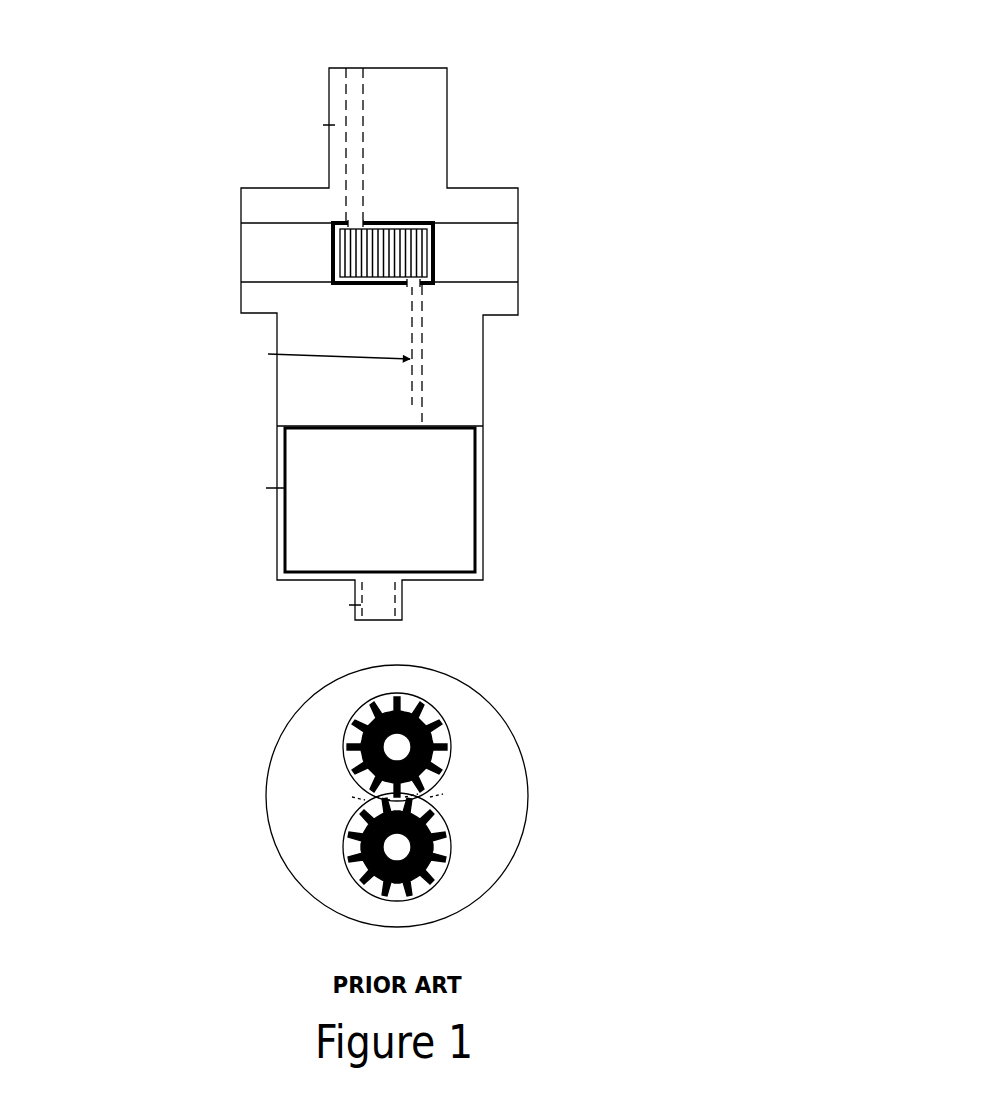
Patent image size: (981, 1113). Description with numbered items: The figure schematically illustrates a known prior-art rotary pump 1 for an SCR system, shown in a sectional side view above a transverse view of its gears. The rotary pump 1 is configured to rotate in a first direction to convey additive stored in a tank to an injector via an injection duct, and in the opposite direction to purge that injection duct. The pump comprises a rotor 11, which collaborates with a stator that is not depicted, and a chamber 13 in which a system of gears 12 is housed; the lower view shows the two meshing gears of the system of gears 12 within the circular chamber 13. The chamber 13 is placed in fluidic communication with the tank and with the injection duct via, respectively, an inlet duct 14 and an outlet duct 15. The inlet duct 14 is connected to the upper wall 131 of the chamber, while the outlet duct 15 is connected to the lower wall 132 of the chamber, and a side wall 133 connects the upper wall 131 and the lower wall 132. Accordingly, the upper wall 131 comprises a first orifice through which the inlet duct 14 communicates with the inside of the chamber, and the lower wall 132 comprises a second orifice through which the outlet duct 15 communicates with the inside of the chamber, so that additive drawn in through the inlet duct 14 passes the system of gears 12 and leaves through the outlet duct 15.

The rotary pump 1 is at (658, 118).
The rotor 11 is at (463, 500).
The system of gears 12 is at (357, 240).
The chamber 13 is at (347, 285).
The upper wall 131 is at (372, 215).
The lower wall 132 is at (433, 285).
The side wall 133 is at (433, 245).
The inlet duct 14 is at (355, 122).
The outlet duct 15 is at (413, 408).